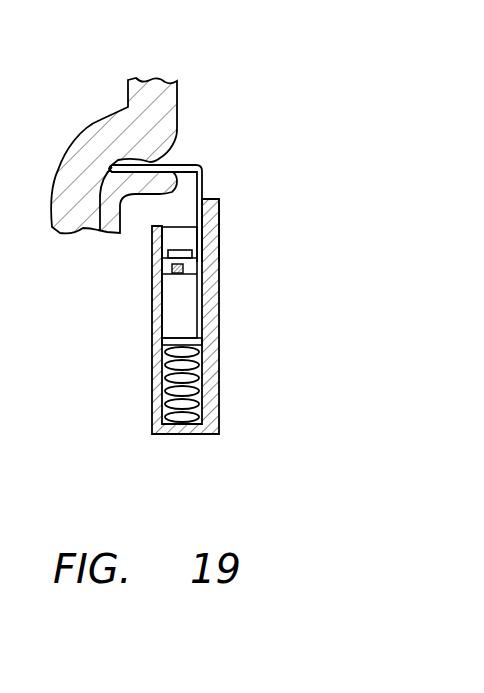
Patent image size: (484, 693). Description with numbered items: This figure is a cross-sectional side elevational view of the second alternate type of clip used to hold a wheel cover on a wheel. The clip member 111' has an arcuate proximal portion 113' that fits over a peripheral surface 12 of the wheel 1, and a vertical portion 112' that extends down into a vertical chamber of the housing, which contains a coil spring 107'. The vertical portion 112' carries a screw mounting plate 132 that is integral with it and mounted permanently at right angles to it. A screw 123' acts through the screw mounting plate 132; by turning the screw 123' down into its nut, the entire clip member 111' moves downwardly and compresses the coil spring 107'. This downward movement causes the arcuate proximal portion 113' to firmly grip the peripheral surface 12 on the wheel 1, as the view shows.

The wheel 1 is at (92, 252).
The peripheral surface 12 is at (200, 163).
The coil spring 107' is at (256, 316).
The clip member 111' is at (278, 200).
The vertical portion 112' is at (247, 286).
The arcuate proximal portion 113' is at (155, 128).
The screw 123' is at (260, 228).
The screw mounting plate 132 is at (184, 267).